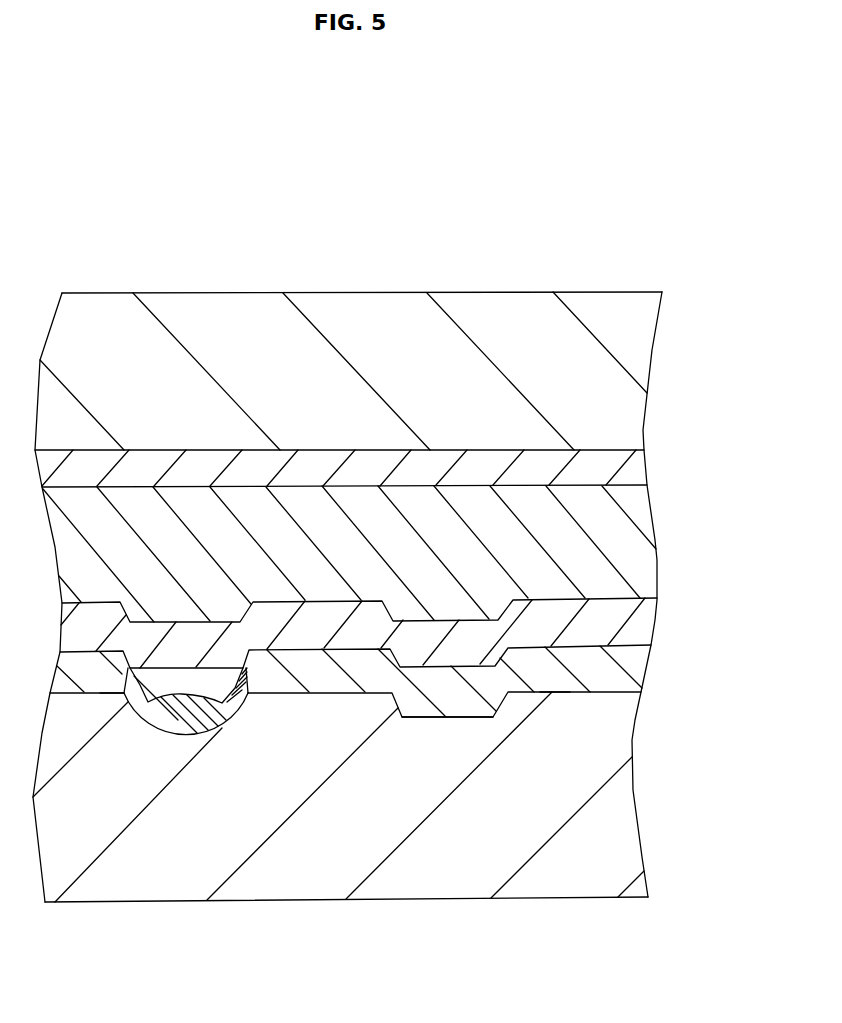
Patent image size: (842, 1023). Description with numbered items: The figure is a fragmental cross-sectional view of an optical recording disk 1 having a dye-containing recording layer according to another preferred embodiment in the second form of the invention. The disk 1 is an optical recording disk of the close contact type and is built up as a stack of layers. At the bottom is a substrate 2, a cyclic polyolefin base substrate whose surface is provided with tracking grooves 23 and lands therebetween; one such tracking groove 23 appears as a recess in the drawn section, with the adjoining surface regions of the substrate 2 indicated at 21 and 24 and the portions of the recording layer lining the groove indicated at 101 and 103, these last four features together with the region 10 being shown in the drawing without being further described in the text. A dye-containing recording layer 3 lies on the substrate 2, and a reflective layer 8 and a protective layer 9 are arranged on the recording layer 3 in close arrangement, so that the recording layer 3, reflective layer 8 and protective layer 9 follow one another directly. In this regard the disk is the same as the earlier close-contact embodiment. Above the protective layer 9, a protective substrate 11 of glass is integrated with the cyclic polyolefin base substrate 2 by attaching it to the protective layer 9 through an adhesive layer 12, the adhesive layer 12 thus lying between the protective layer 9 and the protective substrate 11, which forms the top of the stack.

The optical recording disk 1 is at (664, 272).
The substrate 2 is at (607, 883).
The dye-containing recording layer 3 is at (620, 676).
The reflective layer 8 is at (643, 630).
The protective layer 9 is at (643, 555).
The contact hole 10 is at (254, 714).
The protective substrate 11 is at (458, 312).
The adhesive layer 12 is at (638, 468).
The surface of substrate 21 is at (117, 694).
The tracking groove 23 is at (146, 696).
The recess in insulating film 24 is at (458, 719).
The bottom portion of liner film 101 is at (197, 724).
The side portion of liner film 103 is at (219, 705).